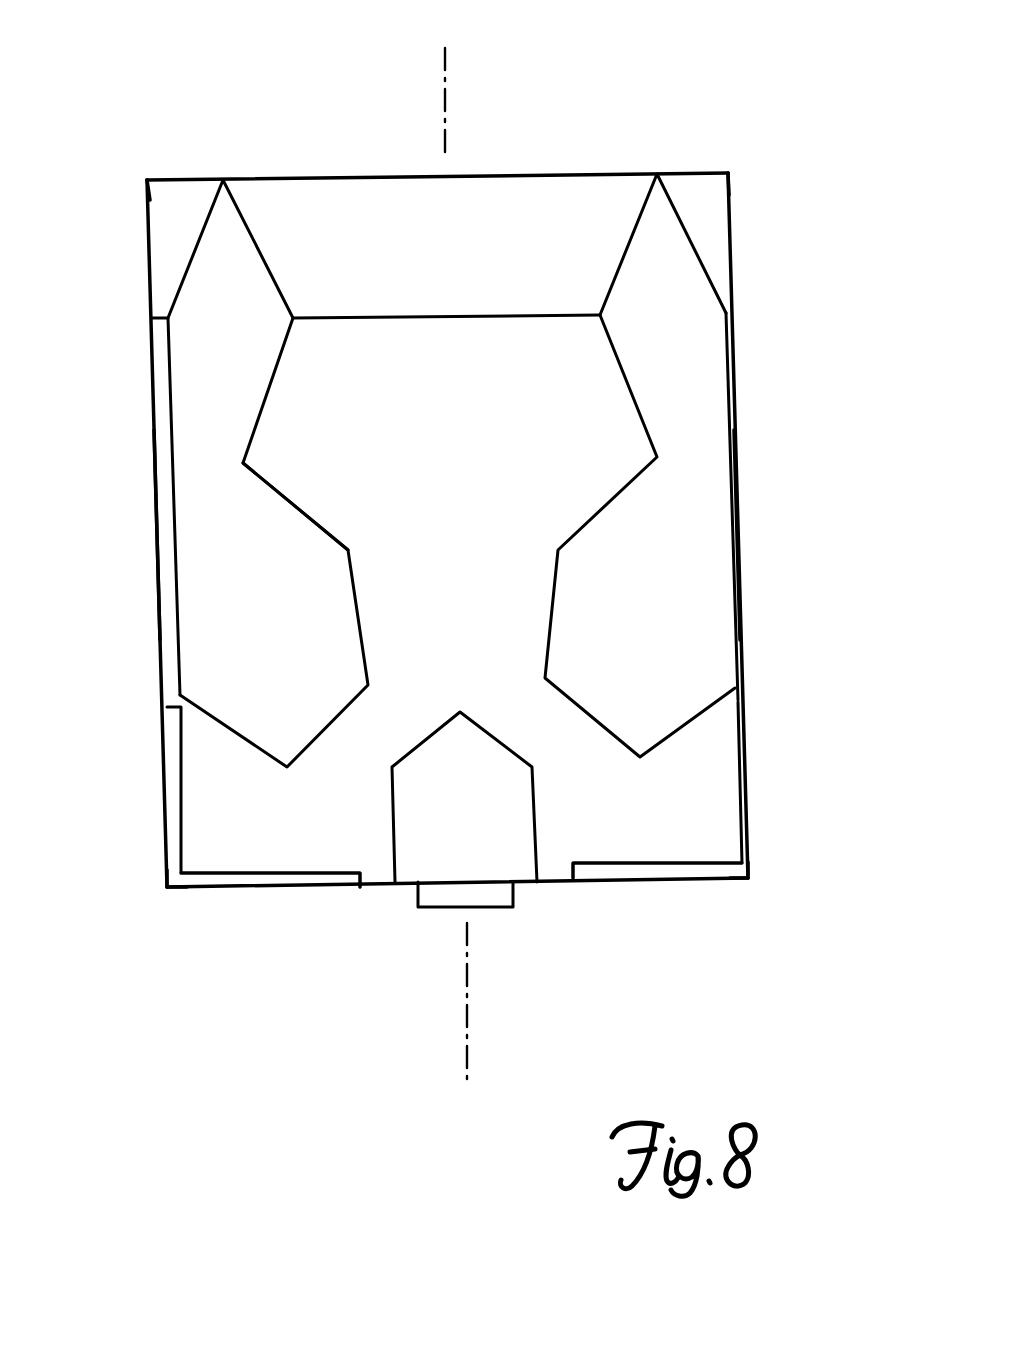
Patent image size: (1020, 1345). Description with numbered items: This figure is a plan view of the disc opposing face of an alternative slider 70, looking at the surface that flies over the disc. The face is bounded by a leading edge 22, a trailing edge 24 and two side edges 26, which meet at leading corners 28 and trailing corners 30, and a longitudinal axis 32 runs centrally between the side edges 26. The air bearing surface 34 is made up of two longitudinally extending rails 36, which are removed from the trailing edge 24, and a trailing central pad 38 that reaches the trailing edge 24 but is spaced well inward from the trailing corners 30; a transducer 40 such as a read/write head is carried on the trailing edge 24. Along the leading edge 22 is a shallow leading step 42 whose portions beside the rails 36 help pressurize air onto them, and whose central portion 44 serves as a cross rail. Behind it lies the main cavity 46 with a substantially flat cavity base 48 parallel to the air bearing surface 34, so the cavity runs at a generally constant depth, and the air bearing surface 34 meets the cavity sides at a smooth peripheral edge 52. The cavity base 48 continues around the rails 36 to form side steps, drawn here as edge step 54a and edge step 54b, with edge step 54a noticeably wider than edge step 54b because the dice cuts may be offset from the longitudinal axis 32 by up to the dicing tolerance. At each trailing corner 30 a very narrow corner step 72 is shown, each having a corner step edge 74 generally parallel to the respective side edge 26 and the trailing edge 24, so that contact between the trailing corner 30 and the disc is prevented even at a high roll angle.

The leading edge 22 is at (272, 178).
The trailing edge 24 is at (391, 885).
The side edges 26 is at (157, 549).
The leading corners 28 is at (147, 180).
The trailing corners 30 is at (168, 889).
The longitudinal axis 32 is at (445, 88).
The air bearing surface 34 is at (658, 504).
The rails 36 is at (207, 391).
The trailing central pad 38 is at (480, 833).
The transducer 40 is at (482, 908).
The leading step 42 is at (587, 190).
The central portion 44 is at (600, 208).
The main cavity 46 is at (406, 350).
The cavity base 48 is at (318, 386).
The peripheral edge 52 is at (360, 617).
The edge step 54a is at (165, 509).
The edge step 54b is at (733, 532).
The slider 70 is at (604, 96).
The corner steps 72 is at (167, 775).
The corner step edge 74 is at (240, 875).